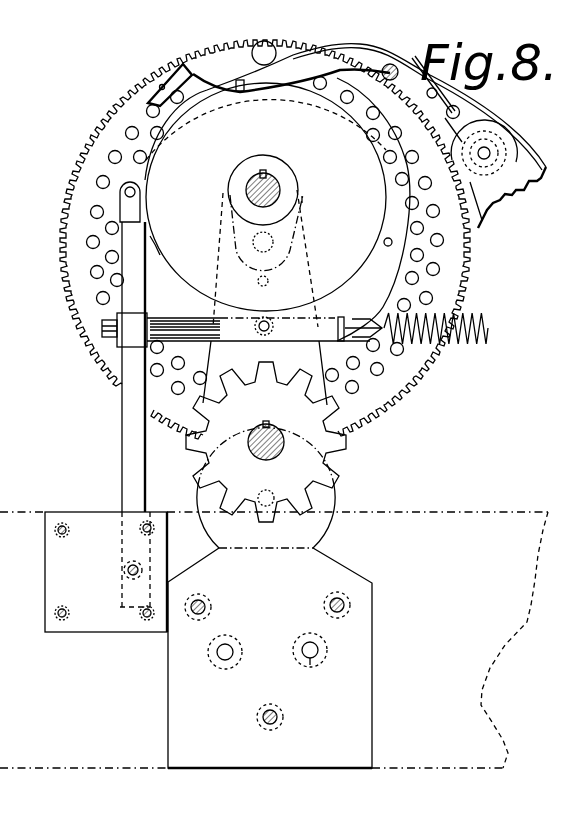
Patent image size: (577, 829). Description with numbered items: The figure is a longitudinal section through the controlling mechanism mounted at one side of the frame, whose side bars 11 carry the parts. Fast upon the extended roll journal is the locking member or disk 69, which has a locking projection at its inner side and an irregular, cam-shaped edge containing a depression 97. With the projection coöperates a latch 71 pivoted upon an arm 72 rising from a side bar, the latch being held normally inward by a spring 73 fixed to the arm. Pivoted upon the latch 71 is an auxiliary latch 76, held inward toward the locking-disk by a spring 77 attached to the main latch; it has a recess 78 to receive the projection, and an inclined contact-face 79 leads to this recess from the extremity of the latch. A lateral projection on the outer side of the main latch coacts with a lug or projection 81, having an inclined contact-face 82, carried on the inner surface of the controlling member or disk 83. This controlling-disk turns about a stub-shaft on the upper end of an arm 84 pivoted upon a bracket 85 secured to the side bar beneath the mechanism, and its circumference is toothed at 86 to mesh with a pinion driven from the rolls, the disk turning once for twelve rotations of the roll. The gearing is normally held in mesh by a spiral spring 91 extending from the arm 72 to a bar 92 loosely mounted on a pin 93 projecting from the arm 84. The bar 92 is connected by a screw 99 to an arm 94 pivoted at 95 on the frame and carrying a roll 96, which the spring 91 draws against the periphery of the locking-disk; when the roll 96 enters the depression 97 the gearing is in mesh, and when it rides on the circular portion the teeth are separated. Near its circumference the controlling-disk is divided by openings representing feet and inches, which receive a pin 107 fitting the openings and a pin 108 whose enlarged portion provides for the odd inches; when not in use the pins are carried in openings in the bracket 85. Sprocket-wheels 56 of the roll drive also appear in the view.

The teeth 86 is at (60, 230).
The controlling member or disk 83 is at (470, 250).
The locking member or disk 69 is at (269, 197).
The latch 71 is at (462, 100).
The arm 72 is at (518, 190).
The spring 77 is at (357, 47).
The spring 73 is at (507, 115).
The auxiliary latch 76 is at (280, 45).
The inclined contact-face 79 is at (218, 85).
The recess 78 is at (240, 92).
The lug or projection 81 is at (172, 64).
The inclined contact-face 82 is at (160, 86).
The roll 96 is at (142, 192).
The depression 97 is at (157, 243).
The pivot 95 is at (303, 200).
The arm 94 is at (121, 440).
The screw 99 is at (100, 340).
The bar 92 is at (264, 329).
The pin 93 is at (265, 320).
The arm 84 is at (265, 297).
The spring 91 is at (485, 318).
The sprocket-wheels 56 is at (350, 447).
The bracket 85 is at (372, 670).
The pin 108 is at (233, 662).
The pin 107 is at (312, 662).
The side bars 11 is at (437, 582).